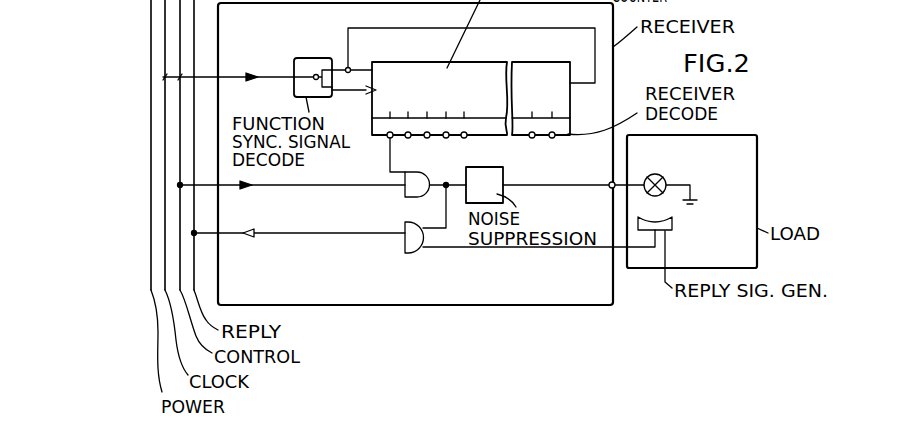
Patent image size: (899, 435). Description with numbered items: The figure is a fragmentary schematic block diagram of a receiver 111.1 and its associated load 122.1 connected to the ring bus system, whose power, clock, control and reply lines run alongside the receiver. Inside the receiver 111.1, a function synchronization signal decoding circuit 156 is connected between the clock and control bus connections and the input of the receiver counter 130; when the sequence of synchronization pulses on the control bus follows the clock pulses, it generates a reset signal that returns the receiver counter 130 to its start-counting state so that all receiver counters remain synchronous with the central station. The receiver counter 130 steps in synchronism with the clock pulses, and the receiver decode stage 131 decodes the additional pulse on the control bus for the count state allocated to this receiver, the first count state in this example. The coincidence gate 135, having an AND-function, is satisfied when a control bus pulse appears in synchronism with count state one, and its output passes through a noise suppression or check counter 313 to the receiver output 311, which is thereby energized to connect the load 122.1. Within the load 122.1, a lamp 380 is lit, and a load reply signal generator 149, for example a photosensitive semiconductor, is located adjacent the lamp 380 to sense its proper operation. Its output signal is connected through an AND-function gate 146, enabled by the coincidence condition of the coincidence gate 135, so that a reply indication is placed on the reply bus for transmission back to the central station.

The receiver 111.1 is at (259, 27).
The function synchronization signal decoding circuit 156 is at (308, 68).
The receiver counter 130 is at (485, 89).
The receiver decode stage 131 is at (571, 134).
The coincidence gate 135 is at (418, 166).
The noise suppression counter 313 is at (498, 169).
The receiver output 311 is at (607, 182).
The AND-function gate 146 is at (406, 236).
The load 122.1 is at (746, 160).
The lamp 380 is at (655, 178).
The load reply signal generator 149 is at (669, 226).